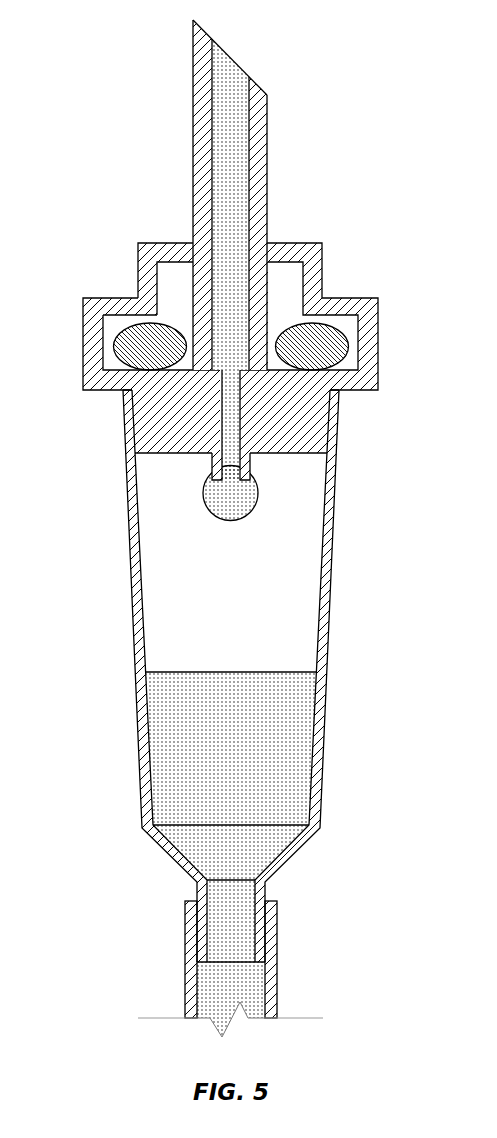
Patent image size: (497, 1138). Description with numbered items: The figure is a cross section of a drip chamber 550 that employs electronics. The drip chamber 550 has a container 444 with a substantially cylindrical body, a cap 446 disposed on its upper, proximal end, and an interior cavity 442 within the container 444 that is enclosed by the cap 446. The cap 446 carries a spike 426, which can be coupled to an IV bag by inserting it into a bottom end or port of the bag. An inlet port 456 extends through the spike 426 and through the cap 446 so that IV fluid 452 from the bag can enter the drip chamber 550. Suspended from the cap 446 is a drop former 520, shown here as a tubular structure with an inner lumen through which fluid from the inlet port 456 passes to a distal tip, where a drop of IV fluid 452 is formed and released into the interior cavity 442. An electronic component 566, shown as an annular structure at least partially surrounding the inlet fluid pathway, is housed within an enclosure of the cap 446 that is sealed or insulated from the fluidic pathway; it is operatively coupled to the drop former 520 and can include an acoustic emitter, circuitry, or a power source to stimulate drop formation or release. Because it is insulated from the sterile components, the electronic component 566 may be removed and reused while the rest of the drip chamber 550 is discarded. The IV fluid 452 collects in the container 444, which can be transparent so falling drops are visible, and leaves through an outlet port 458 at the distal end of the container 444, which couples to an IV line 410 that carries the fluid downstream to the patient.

The drip chamber 550 is at (236, 528).
The inlet port 456 is at (237, 50).
The spike 426 is at (268, 135).
The cap 446 is at (322, 272).
The electronic component 566 is at (283, 328).
The drop former 520 is at (270, 472).
The IV fluid 452 is at (167, 690).
The interior cavity 442 is at (270, 597).
The container 444 is at (328, 660).
The outlet port 458 is at (224, 969).
The IV line 410 is at (277, 975).